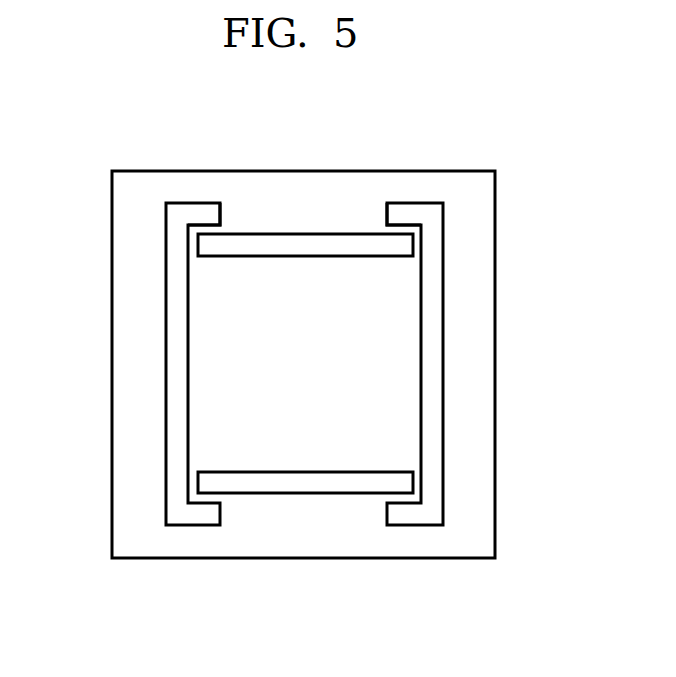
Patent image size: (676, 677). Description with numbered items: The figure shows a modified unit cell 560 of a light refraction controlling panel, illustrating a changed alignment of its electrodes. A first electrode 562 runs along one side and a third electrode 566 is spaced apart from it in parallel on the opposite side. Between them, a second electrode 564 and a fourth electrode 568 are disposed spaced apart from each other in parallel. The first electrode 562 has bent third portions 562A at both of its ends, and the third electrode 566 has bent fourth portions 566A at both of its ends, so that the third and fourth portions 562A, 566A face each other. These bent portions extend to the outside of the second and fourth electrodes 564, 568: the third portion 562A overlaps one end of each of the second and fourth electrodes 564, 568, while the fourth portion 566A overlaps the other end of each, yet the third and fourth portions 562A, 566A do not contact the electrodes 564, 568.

The antenna unit / body 560 is at (265, 183).
The first electrode 562 is at (173, 362).
The third portion 562A is at (200, 214).
The second electrode 564 is at (298, 489).
The third electrode 566 is at (437, 365).
The fourth portion 566A is at (404, 212).
The fourth electrode 568 is at (333, 244).